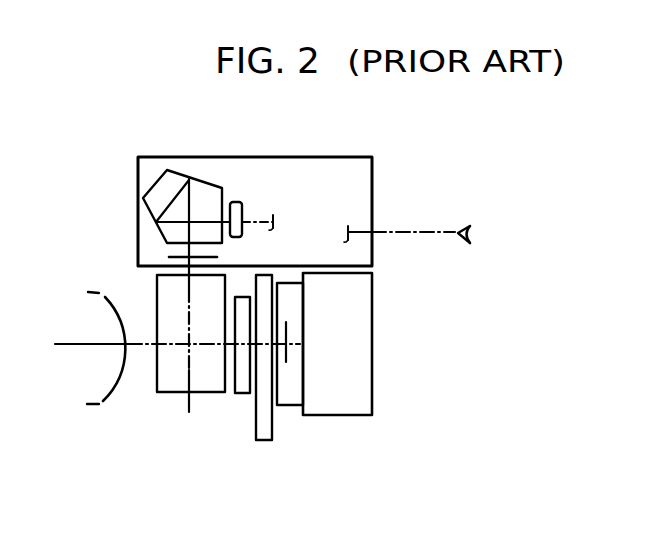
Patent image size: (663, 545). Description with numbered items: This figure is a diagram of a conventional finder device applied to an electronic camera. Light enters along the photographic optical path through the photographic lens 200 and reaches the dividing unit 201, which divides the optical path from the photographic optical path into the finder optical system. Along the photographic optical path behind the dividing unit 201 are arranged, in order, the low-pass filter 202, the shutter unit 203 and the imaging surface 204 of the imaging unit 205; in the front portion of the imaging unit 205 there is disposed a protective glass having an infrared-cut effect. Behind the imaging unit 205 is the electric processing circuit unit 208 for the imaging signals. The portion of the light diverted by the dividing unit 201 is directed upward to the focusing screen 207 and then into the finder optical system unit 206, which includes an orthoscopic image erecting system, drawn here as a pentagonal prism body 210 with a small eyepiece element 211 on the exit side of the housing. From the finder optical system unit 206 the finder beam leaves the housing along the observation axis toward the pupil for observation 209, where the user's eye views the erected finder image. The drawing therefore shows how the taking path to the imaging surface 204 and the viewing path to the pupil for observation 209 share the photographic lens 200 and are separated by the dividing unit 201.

The photographic lens 200 is at (108, 300).
The dividing unit 201 is at (173, 383).
The low-pass filter 202 is at (238, 387).
The shutter unit 203 is at (263, 436).
The imaging surface 204 is at (287, 355).
The imaging unit 205 is at (290, 403).
The finder optical system unit 206 is at (313, 166).
The focusing screen 207 is at (173, 257).
The electric processing circuit unit 208 is at (363, 383).
The pupil for observation 209 is at (473, 226).
The pentaprism 210 is at (207, 197).
The eyepiece lens 211 is at (241, 228).